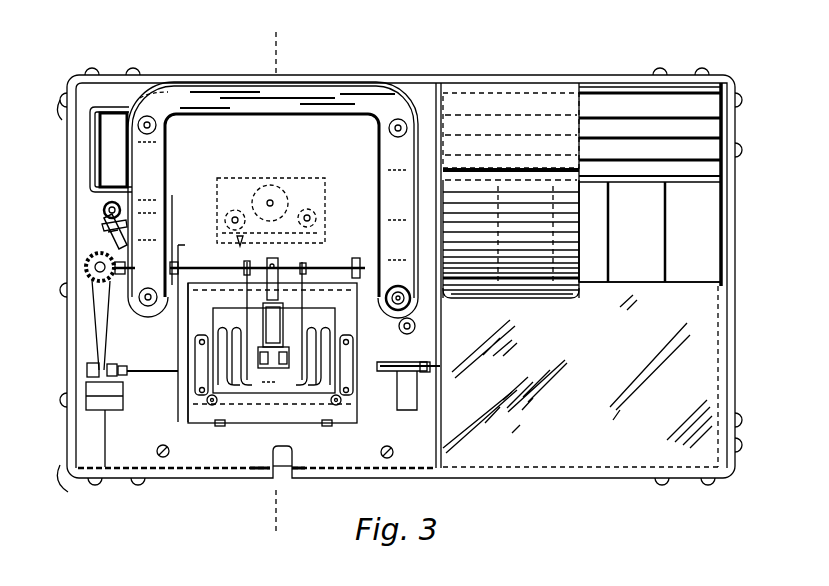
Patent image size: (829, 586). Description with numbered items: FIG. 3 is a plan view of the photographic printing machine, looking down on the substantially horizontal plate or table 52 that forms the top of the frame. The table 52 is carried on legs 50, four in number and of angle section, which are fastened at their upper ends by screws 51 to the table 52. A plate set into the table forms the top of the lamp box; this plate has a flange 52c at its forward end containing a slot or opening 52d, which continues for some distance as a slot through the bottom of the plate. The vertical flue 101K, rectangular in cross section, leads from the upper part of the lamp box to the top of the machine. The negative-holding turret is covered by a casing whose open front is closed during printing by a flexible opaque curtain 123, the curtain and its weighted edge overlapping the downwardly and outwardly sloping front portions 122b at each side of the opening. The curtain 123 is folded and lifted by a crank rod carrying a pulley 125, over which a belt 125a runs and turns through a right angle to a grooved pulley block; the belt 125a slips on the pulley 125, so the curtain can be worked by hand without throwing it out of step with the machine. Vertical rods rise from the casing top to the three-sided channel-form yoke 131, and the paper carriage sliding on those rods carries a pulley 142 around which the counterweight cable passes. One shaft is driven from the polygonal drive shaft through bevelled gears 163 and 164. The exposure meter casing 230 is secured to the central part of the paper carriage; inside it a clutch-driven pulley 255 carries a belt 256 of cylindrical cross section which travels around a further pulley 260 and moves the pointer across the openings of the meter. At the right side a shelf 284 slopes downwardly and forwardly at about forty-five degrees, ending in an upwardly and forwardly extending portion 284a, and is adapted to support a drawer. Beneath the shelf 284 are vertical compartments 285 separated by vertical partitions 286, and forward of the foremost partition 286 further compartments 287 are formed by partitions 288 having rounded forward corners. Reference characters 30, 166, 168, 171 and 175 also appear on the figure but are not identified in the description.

The center line 30 is at (277, 283).
The legs 50 is at (143, 76).
The screws 51 is at (90, 74).
The table 52 is at (700, 322).
The flange 52c is at (298, 468).
The slot 52d is at (276, 479).
The vertical flue 101K is at (105, 162).
The sloping front portions 122b is at (136, 410).
The curtain 123 is at (410, 357).
The pulley 125 is at (88, 370).
The belt 125a is at (108, 316).
The yoke 131 is at (318, 82).
The pulley 142 is at (104, 213).
The bevelled gear 163 is at (86, 266).
The bevelled gear 164 is at (116, 246).
The frame member 166 is at (178, 345).
The fastening screw 168 is at (219, 430).
The switching mechanism 171 is at (314, 310).
The actuating arm 175 is at (276, 259).
The casing 230 is at (300, 178).
The pulley 255 is at (270, 186).
The belt 256 is at (226, 218).
The pulley 260 is at (312, 218).
The shelf 284 is at (580, 270).
The upwardly extending portion 284a is at (518, 298).
The compartments 285 is at (612, 128).
The partitions 286 is at (672, 138).
The compartments 287 is at (688, 282).
The partitions 288 is at (668, 208).